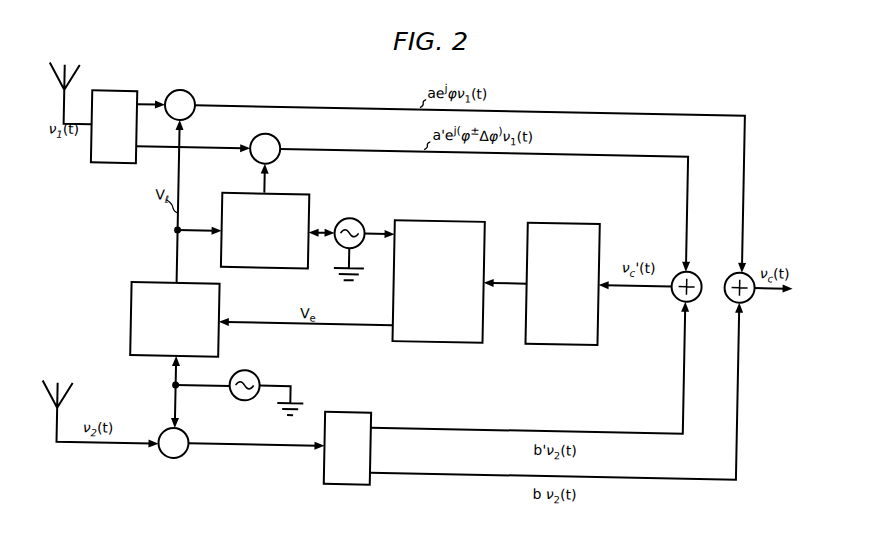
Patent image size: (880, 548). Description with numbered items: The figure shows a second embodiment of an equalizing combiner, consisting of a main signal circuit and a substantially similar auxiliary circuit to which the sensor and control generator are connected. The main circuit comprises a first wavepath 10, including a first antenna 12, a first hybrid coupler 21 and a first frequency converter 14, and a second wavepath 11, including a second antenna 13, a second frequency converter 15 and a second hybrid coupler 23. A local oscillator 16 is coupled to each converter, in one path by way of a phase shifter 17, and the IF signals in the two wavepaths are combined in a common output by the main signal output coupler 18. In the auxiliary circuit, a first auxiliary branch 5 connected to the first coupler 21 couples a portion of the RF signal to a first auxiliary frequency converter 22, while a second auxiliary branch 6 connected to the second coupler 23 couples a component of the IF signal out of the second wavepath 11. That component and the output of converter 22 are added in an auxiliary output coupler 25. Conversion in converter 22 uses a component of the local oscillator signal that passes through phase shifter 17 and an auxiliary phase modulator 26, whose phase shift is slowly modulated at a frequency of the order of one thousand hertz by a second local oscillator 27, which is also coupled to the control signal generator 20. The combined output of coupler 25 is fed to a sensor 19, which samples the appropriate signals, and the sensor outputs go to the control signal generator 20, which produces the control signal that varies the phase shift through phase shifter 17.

The first auxiliary branch 5 is at (221, 135).
The second auxiliary branch 6 is at (541, 409).
The first wavepath 10 is at (590, 95).
The second wavepath 11 is at (504, 494).
The first antenna 12 is at (79, 70).
The second antenna 13 is at (78, 388).
The first frequency converter 14 is at (184, 91).
The second frequency converter 15 is at (189, 431).
The local oscillator 16 is at (248, 369).
The phase shifter 17 is at (223, 305).
The main signal output coupler 18 is at (752, 265).
The sensor 19 is at (575, 216).
The control signal generator 20 is at (452, 216).
The first hybrid coupler 21 is at (120, 92).
The first auxiliary frequency converter 22 is at (272, 123).
The second hybrid coupler 23 is at (360, 409).
The auxiliary output coupler 25 is at (700, 264).
The auxiliary phase modulator 26 is at (307, 192).
The second local oscillator 27 is at (352, 215).